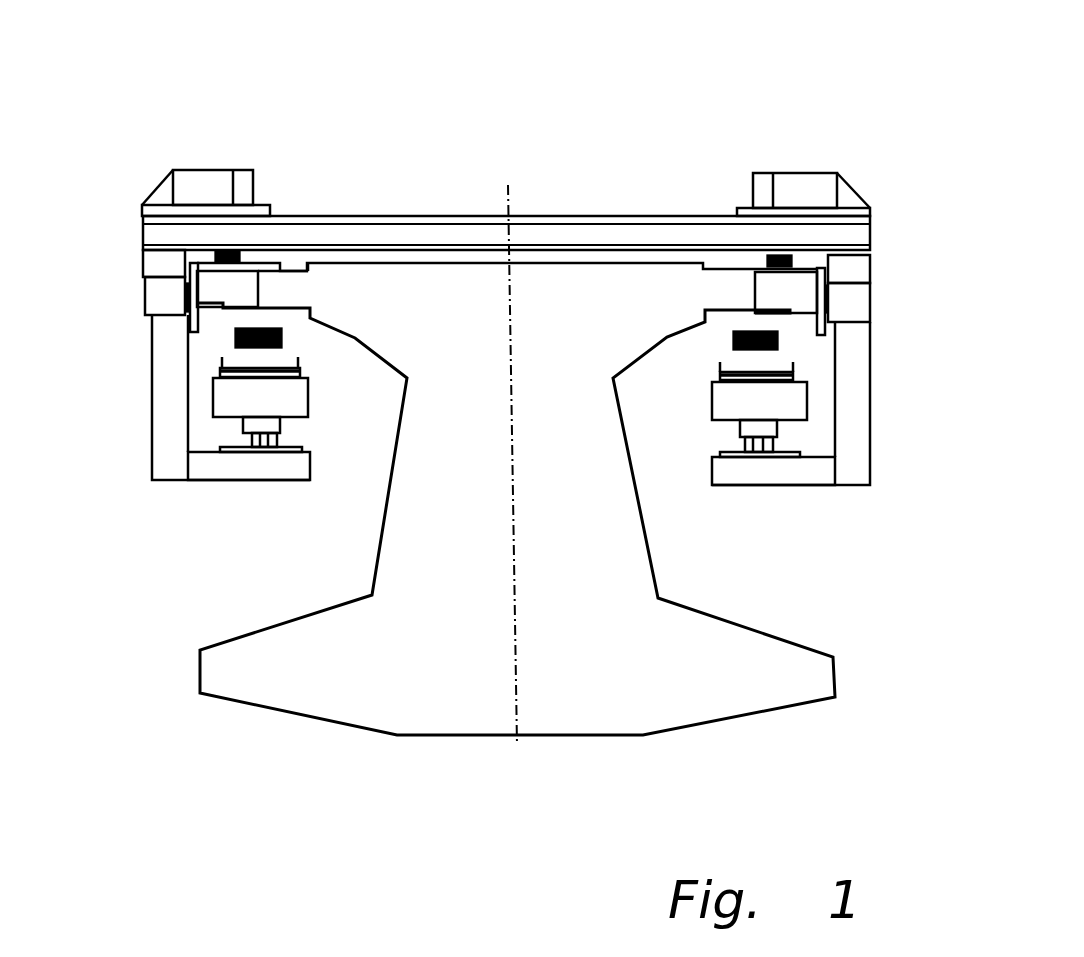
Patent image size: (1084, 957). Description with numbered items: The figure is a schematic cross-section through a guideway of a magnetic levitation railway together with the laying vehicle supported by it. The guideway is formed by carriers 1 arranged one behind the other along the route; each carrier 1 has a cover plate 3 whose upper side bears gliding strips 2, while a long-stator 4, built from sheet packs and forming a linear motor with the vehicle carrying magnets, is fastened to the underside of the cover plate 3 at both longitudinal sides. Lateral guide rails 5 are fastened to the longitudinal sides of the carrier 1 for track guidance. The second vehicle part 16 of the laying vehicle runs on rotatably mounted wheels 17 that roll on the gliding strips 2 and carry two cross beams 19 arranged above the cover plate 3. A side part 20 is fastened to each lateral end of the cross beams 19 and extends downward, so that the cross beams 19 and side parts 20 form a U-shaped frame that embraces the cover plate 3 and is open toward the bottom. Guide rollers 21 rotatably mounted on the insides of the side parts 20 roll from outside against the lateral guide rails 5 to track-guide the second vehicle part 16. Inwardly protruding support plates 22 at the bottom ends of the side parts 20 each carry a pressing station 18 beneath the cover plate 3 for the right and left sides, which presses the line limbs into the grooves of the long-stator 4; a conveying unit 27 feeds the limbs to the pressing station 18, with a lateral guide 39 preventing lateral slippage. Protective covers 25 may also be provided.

The carrier 1 is at (430, 698).
The gliding strip 2 is at (263, 262).
The cover plate 3 is at (290, 292).
The long-stator 4 is at (235, 335).
The lateral guide rail 5 is at (820, 287).
The second vehicle part 16 is at (795, 150).
The wheel 17 is at (215, 252).
The pressing station 18 is at (332, 436).
The cross beam 19 is at (577, 233).
The side part 20 is at (168, 422).
The guide roller 21 is at (828, 290).
The support plate 22 is at (245, 467).
The protective cover 25 is at (208, 182).
The conveying unit 27 is at (780, 364).
The lateral guide 39 is at (717, 370).